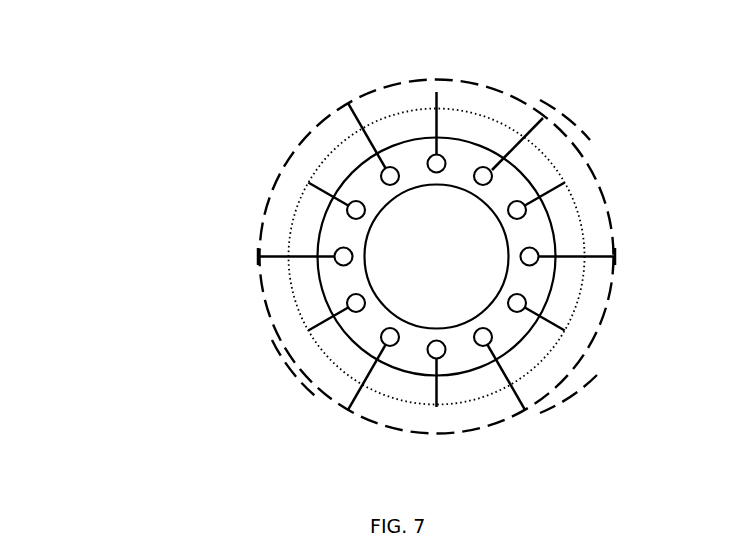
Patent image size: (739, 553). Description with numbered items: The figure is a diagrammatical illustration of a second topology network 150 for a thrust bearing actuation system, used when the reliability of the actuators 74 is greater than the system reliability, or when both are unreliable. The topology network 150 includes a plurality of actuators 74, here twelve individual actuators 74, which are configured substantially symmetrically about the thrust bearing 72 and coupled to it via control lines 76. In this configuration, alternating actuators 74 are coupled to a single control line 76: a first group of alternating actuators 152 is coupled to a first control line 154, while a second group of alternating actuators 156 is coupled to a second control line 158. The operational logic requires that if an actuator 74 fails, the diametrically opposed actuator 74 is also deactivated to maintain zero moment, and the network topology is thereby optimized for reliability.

The second topology network 150 is at (142, 86).
The first group of alternating actuators 152 is at (427, 152).
The first control line 154 is at (558, 122).
The second group of alternating actuators 156 is at (390, 165).
The second control line 158 is at (289, 358).
The thrust bearing 72 is at (568, 378).
The actuators 74 is at (472, 186).
The control lines 76 is at (280, 182).